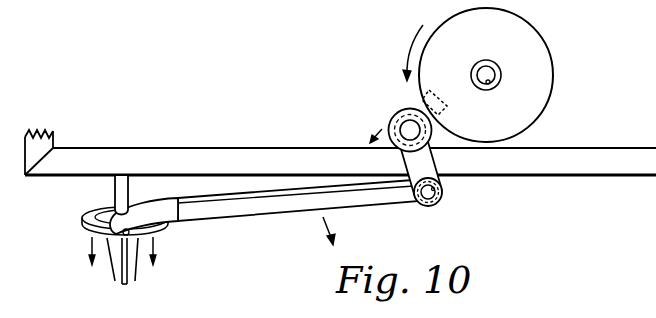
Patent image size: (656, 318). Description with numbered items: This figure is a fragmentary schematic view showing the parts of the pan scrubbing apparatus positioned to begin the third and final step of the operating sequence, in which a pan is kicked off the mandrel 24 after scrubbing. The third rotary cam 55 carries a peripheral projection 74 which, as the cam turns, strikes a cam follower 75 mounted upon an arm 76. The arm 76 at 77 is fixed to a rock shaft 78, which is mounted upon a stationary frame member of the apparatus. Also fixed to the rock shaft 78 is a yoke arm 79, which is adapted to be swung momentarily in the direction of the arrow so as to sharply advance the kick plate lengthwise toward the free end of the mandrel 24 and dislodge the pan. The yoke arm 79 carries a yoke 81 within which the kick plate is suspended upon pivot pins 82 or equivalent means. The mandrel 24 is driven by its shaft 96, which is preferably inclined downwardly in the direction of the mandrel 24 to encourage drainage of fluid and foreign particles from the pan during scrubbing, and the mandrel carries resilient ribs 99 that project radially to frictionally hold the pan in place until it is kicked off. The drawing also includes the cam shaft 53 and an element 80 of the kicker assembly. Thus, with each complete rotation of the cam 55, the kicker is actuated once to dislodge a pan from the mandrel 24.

The mandrel 24 is at (133, 278).
The shaft 53 is at (493, 71).
The third rotary cam 55 is at (549, 86).
The peripheral projection 74 is at (423, 107).
The cam follower 75 is at (398, 118).
The arm 76 is at (430, 165).
The arm fixing point 77 is at (442, 193).
The rock shaft 78 is at (428, 196).
The yoke arm 79 is at (283, 206).
The base ring 80 is at (86, 223).
The yoke 81 is at (160, 226).
The pivot pins 82 is at (90, 216).
The shaft 96 is at (118, 188).
The resilient ribs 99 is at (122, 272).